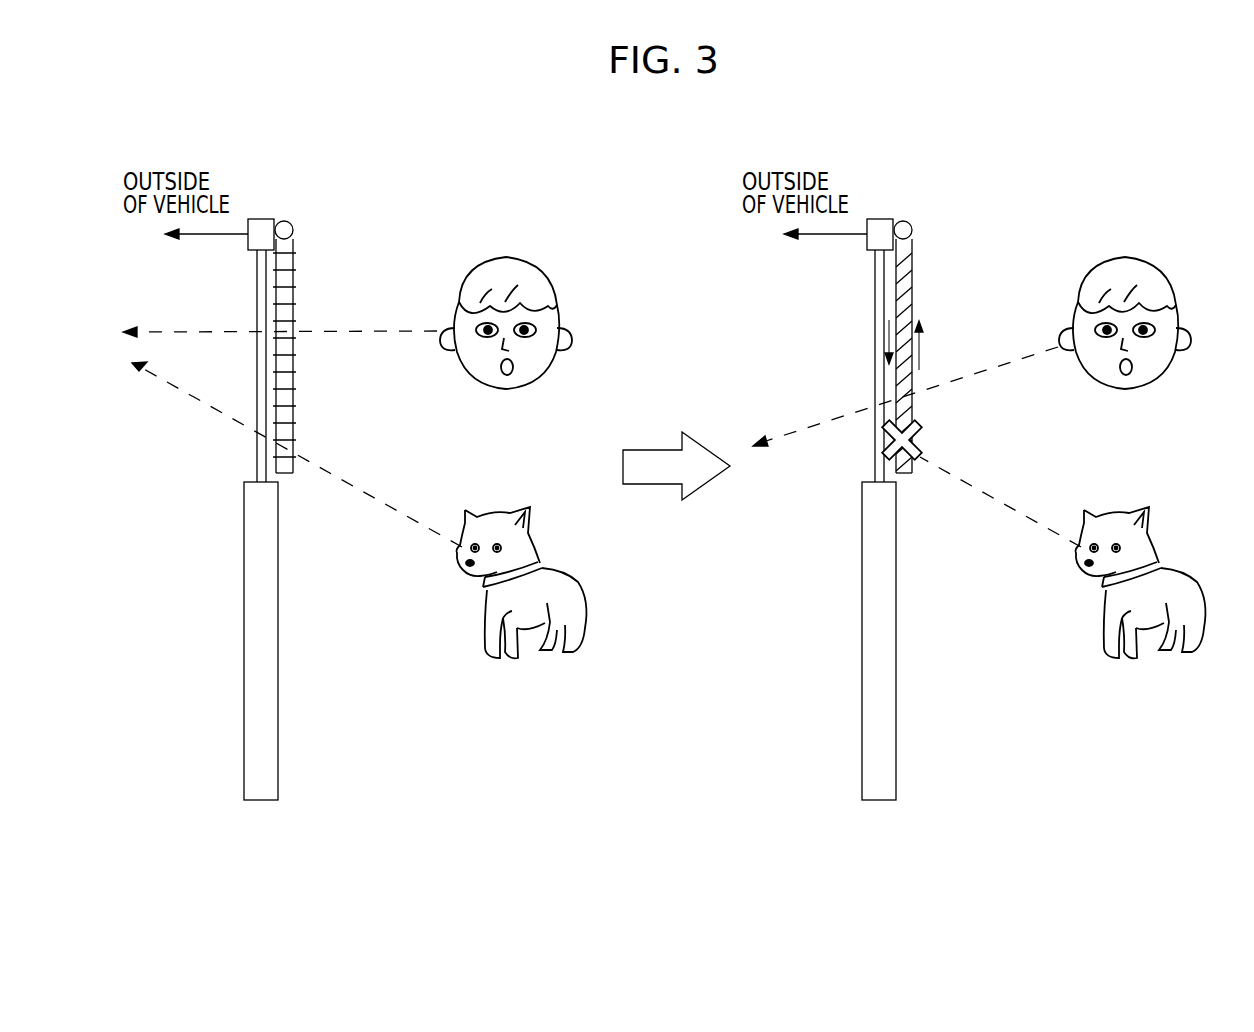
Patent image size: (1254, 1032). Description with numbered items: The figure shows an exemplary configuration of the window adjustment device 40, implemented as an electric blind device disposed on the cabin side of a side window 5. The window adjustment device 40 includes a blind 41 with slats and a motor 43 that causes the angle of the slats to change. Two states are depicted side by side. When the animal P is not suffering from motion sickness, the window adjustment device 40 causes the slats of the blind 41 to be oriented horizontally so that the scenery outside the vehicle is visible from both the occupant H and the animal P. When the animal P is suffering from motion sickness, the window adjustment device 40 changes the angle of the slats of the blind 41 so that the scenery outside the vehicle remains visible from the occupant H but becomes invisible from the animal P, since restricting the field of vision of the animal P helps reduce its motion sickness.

The side window 5 is at (256, 294).
The window adjustment device 40 is at (286, 216).
The blind 41 is at (294, 281).
The motor 43 is at (294, 224).
The occupant H is at (532, 254).
The animal P is at (546, 555).